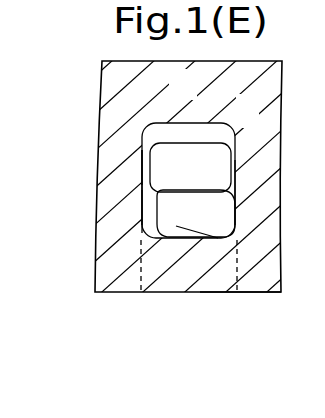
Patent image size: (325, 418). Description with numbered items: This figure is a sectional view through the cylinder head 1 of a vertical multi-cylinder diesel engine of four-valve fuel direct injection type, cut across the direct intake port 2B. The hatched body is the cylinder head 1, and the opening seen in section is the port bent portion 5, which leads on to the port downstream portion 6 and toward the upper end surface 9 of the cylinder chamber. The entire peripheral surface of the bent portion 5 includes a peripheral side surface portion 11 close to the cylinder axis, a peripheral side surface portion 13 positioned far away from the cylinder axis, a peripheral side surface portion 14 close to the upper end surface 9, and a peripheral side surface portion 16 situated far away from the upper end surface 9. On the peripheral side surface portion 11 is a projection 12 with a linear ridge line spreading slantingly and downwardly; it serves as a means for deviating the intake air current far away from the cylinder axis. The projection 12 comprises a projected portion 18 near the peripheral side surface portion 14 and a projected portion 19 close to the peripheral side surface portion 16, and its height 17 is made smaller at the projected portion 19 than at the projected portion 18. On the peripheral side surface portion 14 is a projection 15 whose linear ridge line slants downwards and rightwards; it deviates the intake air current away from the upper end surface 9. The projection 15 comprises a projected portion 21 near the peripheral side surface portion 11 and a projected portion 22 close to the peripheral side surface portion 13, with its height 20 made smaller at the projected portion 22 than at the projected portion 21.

The cylinder head 1 is at (266, 87).
The direct intake port 2B is at (136, 124).
The port bent portion 5 is at (214, 154).
The port downstream portion 6 is at (223, 262).
The upper end surface 9 is at (262, 293).
The peripheral side surface portion 11 is at (143, 217).
The projection 12 is at (152, 182).
The peripheral side surface portion 13 is at (236, 204).
The peripheral side surface portion 14 is at (175, 231).
The projection 15 is at (186, 210).
The peripheral side surface portion 16 is at (181, 136).
The height 17 is at (91, 151).
The projected portion 18 is at (148, 205).
The projected portion 19 is at (146, 164).
The height 20 is at (238, 350).
The projected portion 21 is at (167, 240).
The projected portion 22 is at (207, 240).